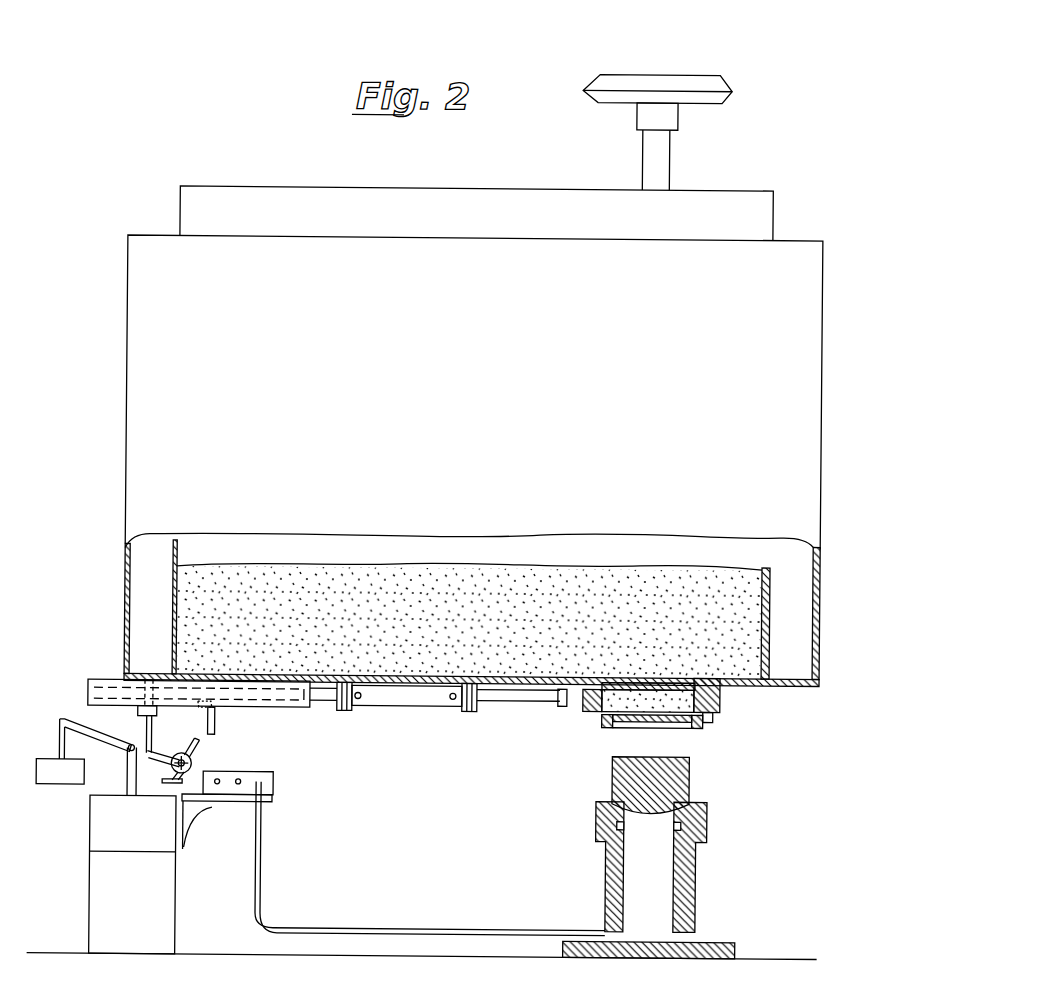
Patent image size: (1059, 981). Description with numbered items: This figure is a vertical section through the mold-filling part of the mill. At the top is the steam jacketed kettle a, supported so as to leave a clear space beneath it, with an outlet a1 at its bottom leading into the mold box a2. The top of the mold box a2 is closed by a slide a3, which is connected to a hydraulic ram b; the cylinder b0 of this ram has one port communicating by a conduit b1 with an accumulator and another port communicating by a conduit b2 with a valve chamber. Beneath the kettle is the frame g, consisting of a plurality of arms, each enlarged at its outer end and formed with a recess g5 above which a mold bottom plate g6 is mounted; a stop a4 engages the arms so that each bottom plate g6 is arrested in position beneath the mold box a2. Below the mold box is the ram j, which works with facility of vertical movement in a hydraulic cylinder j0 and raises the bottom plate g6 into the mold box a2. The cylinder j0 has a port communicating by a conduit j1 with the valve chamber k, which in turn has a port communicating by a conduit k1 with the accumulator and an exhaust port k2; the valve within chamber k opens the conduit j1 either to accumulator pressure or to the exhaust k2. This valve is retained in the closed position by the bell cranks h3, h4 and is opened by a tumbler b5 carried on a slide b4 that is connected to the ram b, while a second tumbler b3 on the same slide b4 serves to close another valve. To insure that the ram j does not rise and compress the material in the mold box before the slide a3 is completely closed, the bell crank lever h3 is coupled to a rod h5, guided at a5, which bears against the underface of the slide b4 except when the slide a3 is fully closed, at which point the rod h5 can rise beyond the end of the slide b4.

The steam jacketed kettle a is at (770, 626).
The outlet a1 is at (640, 684).
The mold box a2 is at (721, 698).
The slide a3 is at (585, 690).
The stop a4 is at (708, 718).
The guide a5 is at (142, 714).
The hydraulic ram b is at (333, 704).
The conduit b1 is at (360, 700).
The cylinder b0 is at (407, 706).
The conduit b2 is at (454, 700).
The tumbler b3 is at (221, 726).
The slide b4 is at (308, 714).
The tumbler b5 is at (219, 736).
The frame g is at (694, 722).
The recess g5 is at (672, 726).
The mold bottom plate g6 is at (629, 717).
The bell crank h3 is at (173, 791).
The bell crank h4 is at (116, 745).
The rod h5 is at (150, 730).
The ram j is at (661, 887).
The hydraulic cylinder j0 is at (613, 873).
The conduit j1 is at (444, 908).
The valve chamber k is at (272, 795).
The conduit k1 is at (221, 787).
The exhaust port k2 is at (240, 787).